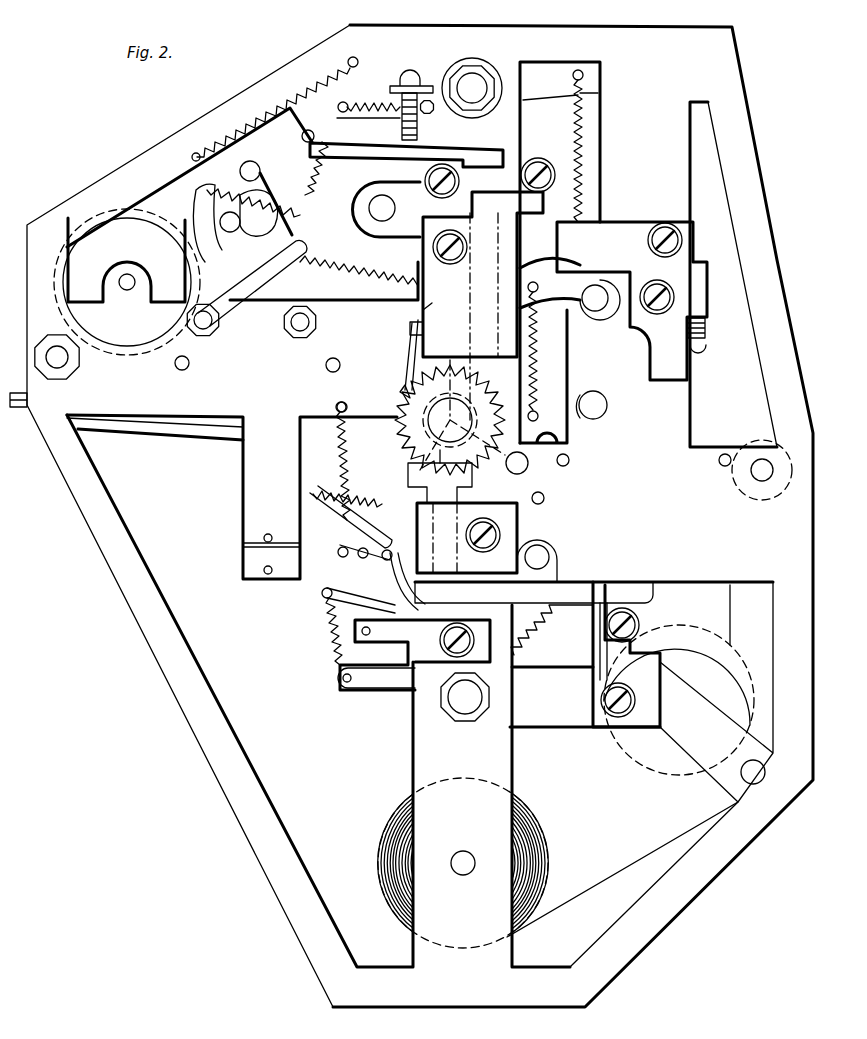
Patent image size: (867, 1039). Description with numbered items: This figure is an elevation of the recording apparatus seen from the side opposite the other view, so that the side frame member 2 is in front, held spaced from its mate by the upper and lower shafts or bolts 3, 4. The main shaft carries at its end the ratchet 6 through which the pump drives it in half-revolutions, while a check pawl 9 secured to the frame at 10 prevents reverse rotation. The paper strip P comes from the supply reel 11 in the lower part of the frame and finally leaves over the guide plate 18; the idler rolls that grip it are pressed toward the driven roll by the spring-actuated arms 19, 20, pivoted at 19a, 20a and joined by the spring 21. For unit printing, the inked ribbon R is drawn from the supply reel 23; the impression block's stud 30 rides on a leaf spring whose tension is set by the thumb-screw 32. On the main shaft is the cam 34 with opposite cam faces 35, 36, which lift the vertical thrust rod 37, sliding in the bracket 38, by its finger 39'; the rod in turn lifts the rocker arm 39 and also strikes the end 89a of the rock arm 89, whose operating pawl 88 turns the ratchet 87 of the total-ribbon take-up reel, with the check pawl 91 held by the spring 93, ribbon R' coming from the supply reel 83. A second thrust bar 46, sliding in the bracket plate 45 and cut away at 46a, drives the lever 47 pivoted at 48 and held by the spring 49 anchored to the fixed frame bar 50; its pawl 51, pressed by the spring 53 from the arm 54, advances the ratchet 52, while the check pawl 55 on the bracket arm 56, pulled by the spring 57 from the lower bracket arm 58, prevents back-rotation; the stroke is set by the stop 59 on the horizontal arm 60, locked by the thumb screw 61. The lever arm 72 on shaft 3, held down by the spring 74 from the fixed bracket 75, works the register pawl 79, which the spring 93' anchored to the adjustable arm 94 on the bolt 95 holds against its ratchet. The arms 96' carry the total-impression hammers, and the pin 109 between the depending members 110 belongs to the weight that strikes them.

The side frame member 2 is at (772, 268).
The upper shaft or bolt 3 is at (480, 80).
The lower shaft or bolt 4 is at (483, 699).
The ratchet 6 is at (399, 395).
The check pawl 9 is at (408, 367).
The pivot point of check pawl 10 is at (409, 332).
The supply reel 11 is at (540, 838).
The guide plate 18 is at (15, 410).
The spring-actuated arm 19 is at (549, 275).
The pivot point of arm 19 19a is at (598, 314).
The spring-actuated arm 20 is at (522, 400).
The pivot point of arm 20 20a is at (608, 406).
The spring 21 is at (538, 354).
The supply reel 23 is at (668, 768).
The stud or pin 30 is at (461, 185).
The thumb-screw 32 is at (704, 340).
The cam 34 is at (437, 408).
The cam face 35 is at (462, 434).
The cam face 36 is at (446, 447).
The vertical thrust rod 37 is at (470, 297).
The bracket 38 is at (432, 305).
The rocker arm 39 is at (538, 156).
The finger 39' is at (466, 285).
The bracket plate 45 is at (518, 532).
The second thrust bar 46 is at (472, 494).
The cut-away portion 46a is at (478, 488).
The lever 47 is at (594, 593).
The pivot 48 is at (549, 557).
The spring 49 is at (339, 450).
The horizontal fixed frame bar 50 is at (420, 675).
The pawl 51 is at (388, 592).
The ratchet 52 is at (535, 633).
The spring 53 is at (366, 496).
The arm 54 is at (333, 527).
The check pawl 55 is at (343, 608).
The horizontal fixed bracket arm 56 is at (415, 655).
The spring 57 is at (338, 652).
The second horizontal bracket arm 58 is at (358, 692).
The stop 59 is at (636, 637).
The horizontal arm 60 is at (556, 718).
The thumb screw 61 is at (630, 698).
The lever arm 72 is at (559, 75).
The spring 74 is at (586, 172).
The fixed horizontal bracket 75 is at (597, 230).
The pawl 79 is at (194, 212).
The supply reel 83 is at (105, 240).
The ratchet 87 is at (324, 278).
The operating pawl 88 is at (311, 188).
The rock arm 89 is at (372, 150).
The end of rock arm 89a is at (485, 150).
The check pawl 91 is at (395, 117).
The spring 93 is at (312, 109).
The spring 93' is at (253, 211).
The arm 94 is at (240, 302).
The bolt 95 is at (207, 332).
The arms 96' is at (155, 441).
The lateral pin or stud 109 is at (243, 543).
The depending members 110 is at (243, 529).
The inked ribbon R is at (731, 632).
The strip of paper P is at (638, 862).